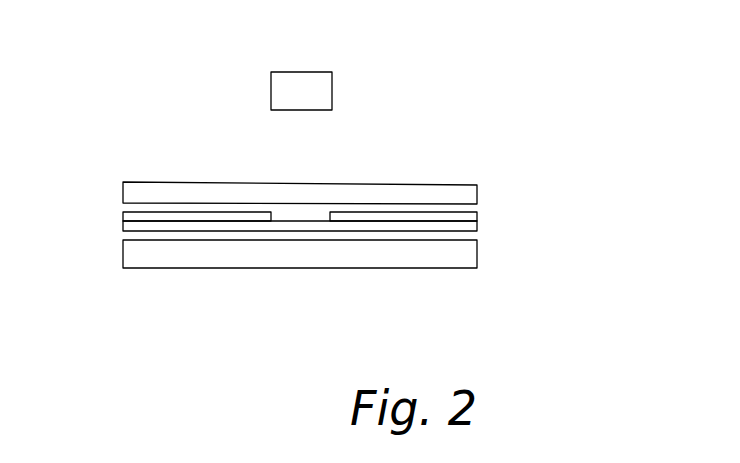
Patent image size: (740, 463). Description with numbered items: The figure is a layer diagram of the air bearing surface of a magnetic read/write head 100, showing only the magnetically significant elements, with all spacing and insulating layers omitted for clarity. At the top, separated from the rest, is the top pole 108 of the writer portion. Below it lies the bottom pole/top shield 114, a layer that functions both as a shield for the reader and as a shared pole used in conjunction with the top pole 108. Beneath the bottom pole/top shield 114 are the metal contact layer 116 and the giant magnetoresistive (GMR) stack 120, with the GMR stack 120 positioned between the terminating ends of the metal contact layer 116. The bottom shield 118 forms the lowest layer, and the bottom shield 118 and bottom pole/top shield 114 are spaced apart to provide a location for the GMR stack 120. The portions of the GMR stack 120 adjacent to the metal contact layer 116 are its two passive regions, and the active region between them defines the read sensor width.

The magnetic read/write head 100 is at (510, 121).
The top pole 108 is at (327, 99).
The bottom pole/top shield 114 is at (130, 190).
The metal contact layer 116 is at (130, 217).
The bottom shield 118 is at (468, 260).
The giant magnetoresistive (GMR) stack 120 is at (470, 228).